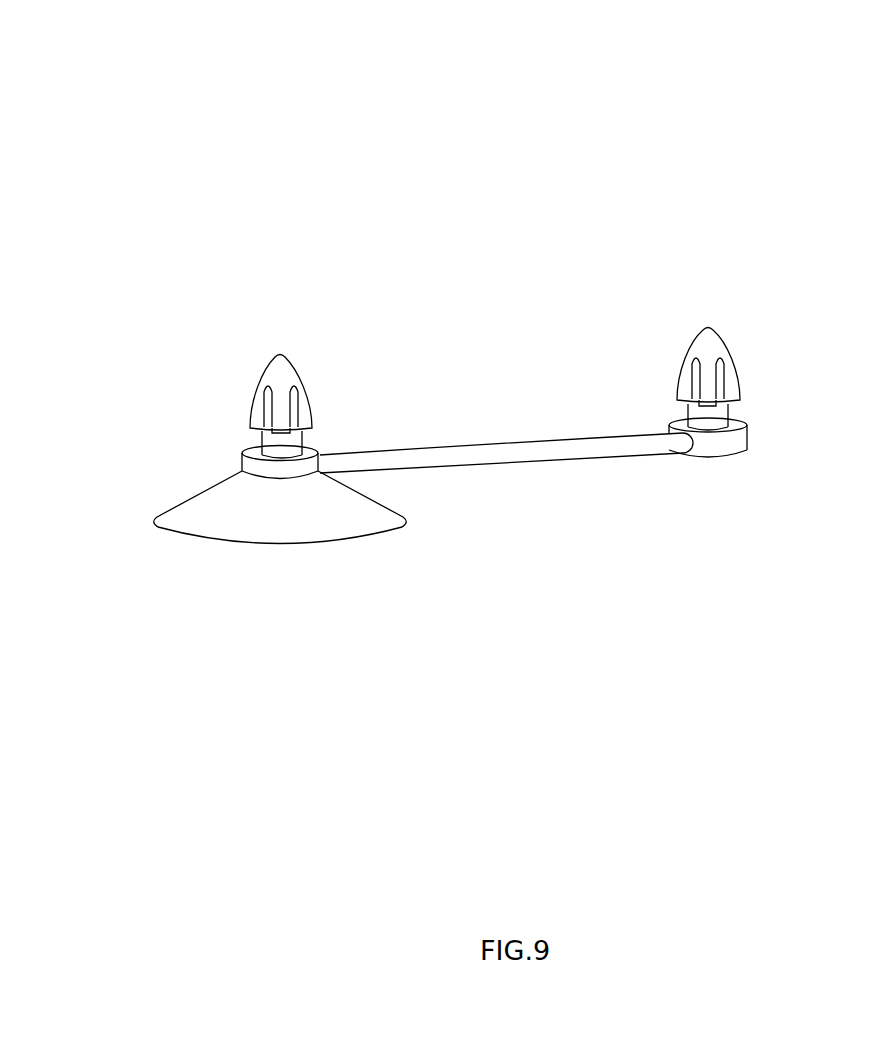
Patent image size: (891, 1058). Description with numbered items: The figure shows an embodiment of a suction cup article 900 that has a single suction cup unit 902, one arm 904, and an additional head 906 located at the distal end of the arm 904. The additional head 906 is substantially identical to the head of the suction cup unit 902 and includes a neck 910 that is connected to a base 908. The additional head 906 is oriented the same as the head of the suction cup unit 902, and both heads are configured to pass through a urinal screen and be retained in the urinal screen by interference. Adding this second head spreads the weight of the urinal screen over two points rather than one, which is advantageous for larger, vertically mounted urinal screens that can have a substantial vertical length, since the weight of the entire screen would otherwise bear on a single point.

The suction cup article 900 is at (72, 63).
The suction cup unit 902 is at (210, 414).
The arm 904 is at (463, 443).
The additional head 906 is at (725, 342).
The base 908 is at (732, 453).
The neck 910 is at (712, 410).